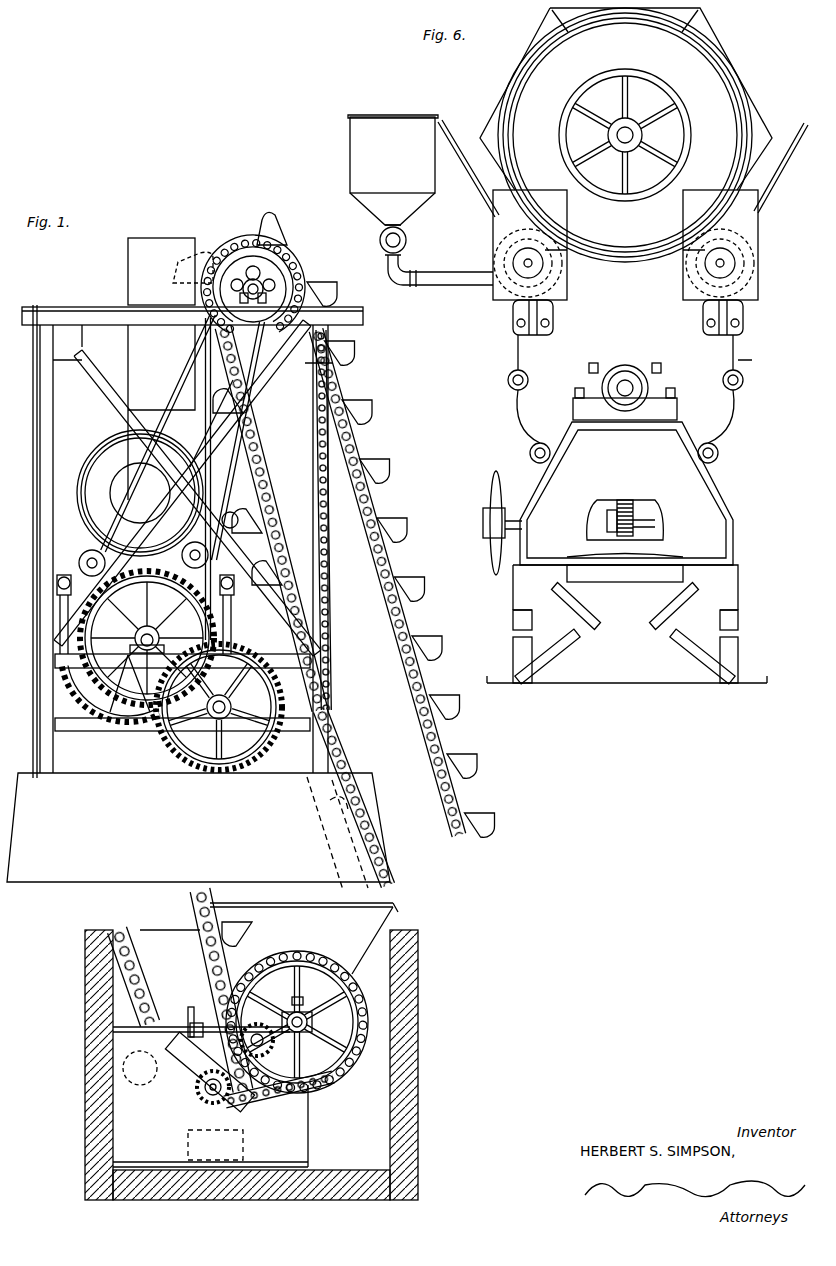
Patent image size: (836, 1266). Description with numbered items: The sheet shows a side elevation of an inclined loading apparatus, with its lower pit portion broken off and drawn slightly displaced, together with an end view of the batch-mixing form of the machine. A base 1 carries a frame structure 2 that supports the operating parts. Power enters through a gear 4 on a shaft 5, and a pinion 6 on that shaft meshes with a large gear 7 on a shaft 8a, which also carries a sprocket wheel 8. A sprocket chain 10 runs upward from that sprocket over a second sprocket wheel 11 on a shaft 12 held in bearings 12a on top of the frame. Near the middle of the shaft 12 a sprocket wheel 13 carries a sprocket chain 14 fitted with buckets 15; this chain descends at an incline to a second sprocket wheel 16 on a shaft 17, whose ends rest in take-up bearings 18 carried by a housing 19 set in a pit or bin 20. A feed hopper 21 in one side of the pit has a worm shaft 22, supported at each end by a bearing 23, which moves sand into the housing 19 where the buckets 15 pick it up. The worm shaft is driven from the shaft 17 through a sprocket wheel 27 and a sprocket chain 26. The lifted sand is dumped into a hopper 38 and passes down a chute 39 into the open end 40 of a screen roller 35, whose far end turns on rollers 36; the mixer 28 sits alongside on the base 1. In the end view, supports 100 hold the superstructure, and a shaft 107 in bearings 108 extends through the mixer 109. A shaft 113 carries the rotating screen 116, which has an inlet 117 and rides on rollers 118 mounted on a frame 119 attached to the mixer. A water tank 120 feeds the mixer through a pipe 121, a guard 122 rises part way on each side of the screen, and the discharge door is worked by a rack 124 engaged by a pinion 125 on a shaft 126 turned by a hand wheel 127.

In FIG. 1, the base 1 is at (47, 866).
In FIG. 1, the frame structure 2 is at (90, 307).
In FIG. 1, the gear 4 is at (162, 750).
In FIG. 1, the shaft 5 is at (222, 722).
In FIG. 1, the pinion 6 is at (232, 708).
In FIG. 1, the large gear 7 is at (85, 696).
In FIG. 1, the sprocket wheel 8 is at (220, 626).
In FIG. 1, the shaft 8a is at (138, 640).
In FIG. 1, the sprocket chain 10 is at (172, 377).
In FIG. 1, the second sprocket wheel 11 is at (243, 252).
In FIG. 1, the shaft 12 is at (284, 266).
In FIG. 1, the bearings 12a is at (296, 278).
In FIG. 1, the sprocket wheel 13 is at (252, 338).
In FIG. 1, the sprocket chain 14 is at (378, 553).
In FIG. 1, the buckets 15 is at (262, 512).
In FIG. 1, the second sprocket wheel 16 is at (155, 1074).
In FIG. 1, the shaft 17 is at (200, 1095).
In FIG. 1, the take-up bearings 18 is at (184, 1070).
In FIG. 1, the housing 19 is at (300, 1145).
In FIG. 1, the pit or bin 20 is at (396, 1096).
In FIG. 1, the feed hopper 21 is at (382, 924).
In FIG. 1, the worm shaft 22 is at (355, 1050).
In FIG. 1, the bearing 23 is at (304, 1013).
In FIG. 1, the sprocket chain 26 is at (330, 1090).
In FIG. 1, the sprocket wheel 27 is at (258, 1098).
In FIG. 1, the mixer 28 is at (66, 577).
In FIG. 1, the screen roller 35 is at (100, 443).
In FIG. 1, the rollers 36 is at (88, 552).
In FIG. 1, the hopper 38 is at (158, 238).
In FIG. 1, the chute 39 is at (120, 428).
In FIG. 1, the open end of screen roller 40 is at (112, 470).
In FIG. 6, the supports 100 is at (722, 662).
In FIG. 6, the shaft 107 is at (617, 386).
In FIG. 6, the bearings 108 is at (626, 366).
In FIG. 6, the mixer 109 is at (738, 360).
In FIG. 6, the shaft 113 is at (627, 128).
In FIG. 6, the rotating screen 116 is at (748, 107).
In FIG. 6, the inlet 117 is at (657, 100).
In FIG. 6, the rollers 118 is at (561, 291).
In FIG. 6, the frame 119 is at (556, 328).
In FIG. 6, the water tank 120 is at (410, 126).
In FIG. 6, the pipe 121 is at (447, 285).
In FIG. 6, the guard 122 is at (449, 134).
In FIG. 6, the rack 124 is at (626, 500).
In FIG. 6, the pinion 125 is at (640, 516).
In FIG. 6, the shaft 126 is at (652, 526).
In FIG. 6, the hand wheel 127 is at (497, 471).